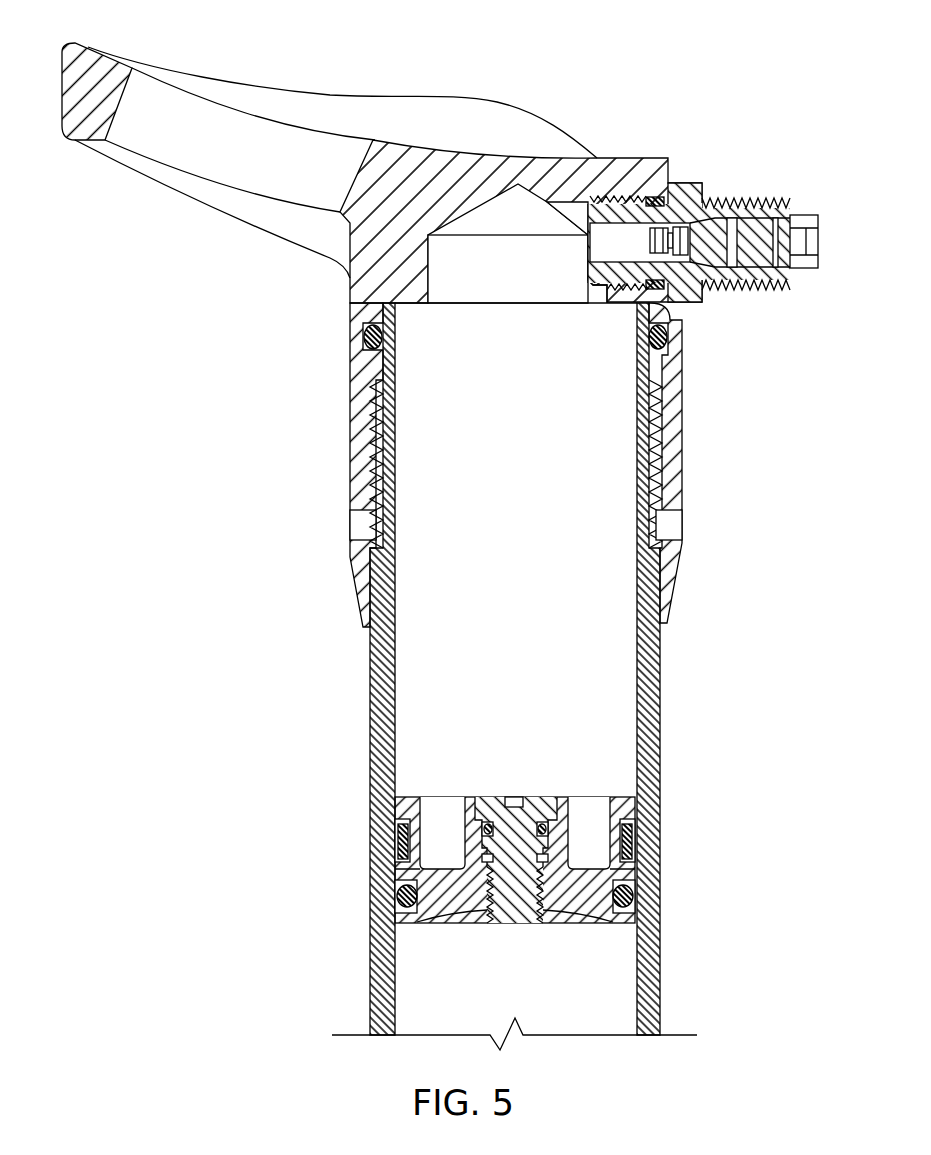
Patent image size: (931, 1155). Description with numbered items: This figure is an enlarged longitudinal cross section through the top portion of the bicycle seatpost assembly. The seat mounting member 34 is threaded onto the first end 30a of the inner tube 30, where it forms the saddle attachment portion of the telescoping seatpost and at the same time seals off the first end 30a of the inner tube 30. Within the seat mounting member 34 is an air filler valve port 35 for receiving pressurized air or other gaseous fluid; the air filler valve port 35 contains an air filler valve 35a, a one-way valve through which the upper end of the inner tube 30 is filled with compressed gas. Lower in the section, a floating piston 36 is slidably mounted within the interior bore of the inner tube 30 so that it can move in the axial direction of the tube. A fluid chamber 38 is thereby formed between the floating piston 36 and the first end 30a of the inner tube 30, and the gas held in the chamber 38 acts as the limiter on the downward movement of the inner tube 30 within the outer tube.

The inner tube 30 is at (370, 718).
The first end of the inner tube 30a is at (523, 302).
The seat mounting member 34 is at (315, 97).
The air filler valve port 35 is at (712, 203).
The air filler valve 35a is at (756, 250).
The floating piston 36 is at (560, 797).
The fluid chamber 38 is at (580, 430).